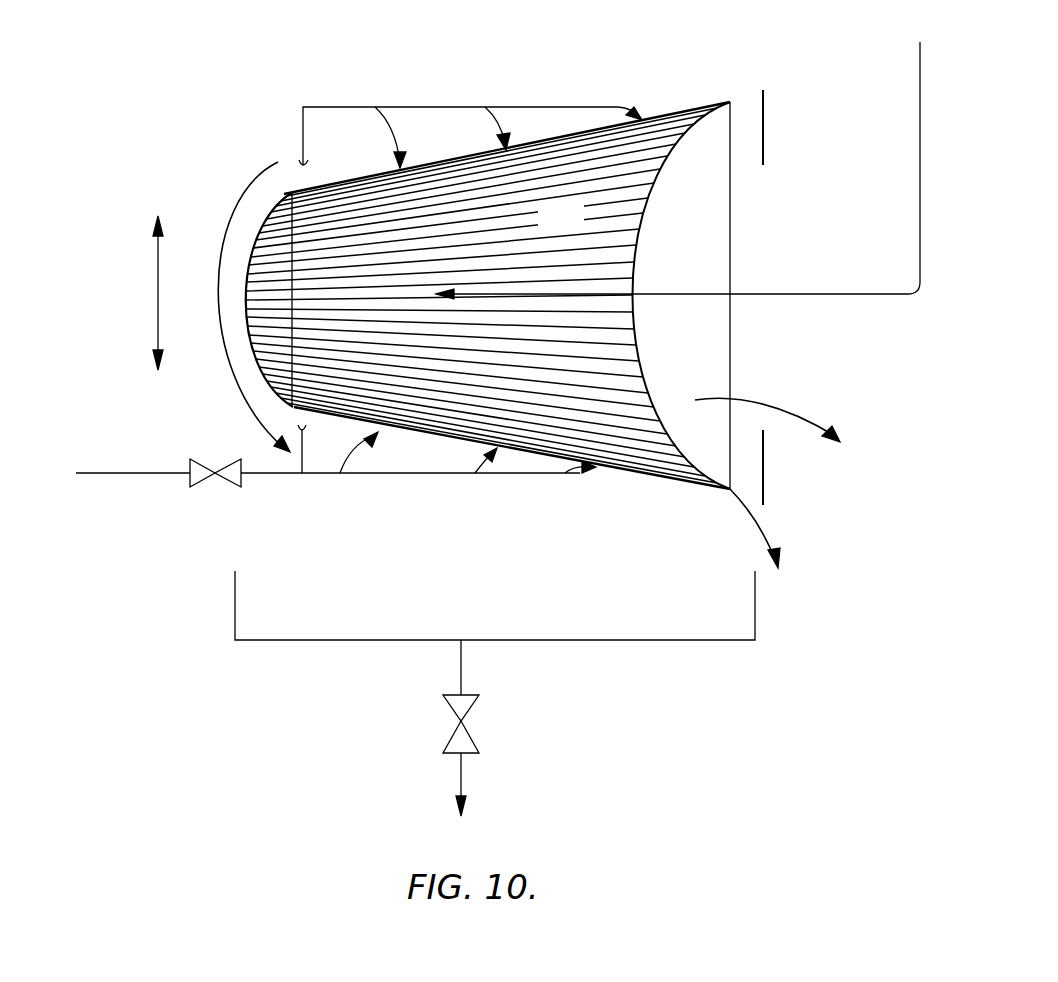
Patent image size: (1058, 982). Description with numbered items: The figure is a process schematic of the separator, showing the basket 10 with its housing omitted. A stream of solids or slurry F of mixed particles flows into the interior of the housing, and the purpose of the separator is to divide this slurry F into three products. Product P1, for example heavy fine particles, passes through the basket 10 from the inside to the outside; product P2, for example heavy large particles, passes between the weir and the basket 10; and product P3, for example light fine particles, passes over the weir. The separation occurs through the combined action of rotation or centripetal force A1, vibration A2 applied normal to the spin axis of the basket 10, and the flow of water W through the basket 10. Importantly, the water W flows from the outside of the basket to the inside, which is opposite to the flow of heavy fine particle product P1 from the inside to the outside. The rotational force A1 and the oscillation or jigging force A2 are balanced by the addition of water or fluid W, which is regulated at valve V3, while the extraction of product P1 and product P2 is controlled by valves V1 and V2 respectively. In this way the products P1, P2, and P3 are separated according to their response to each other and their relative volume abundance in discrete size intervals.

The basket 10 is at (572, 230).
The stream of solids F is at (680, 155).
The water W is at (552, 107).
The rotation or centripetal force A1 is at (252, 186).
The vibration A2 is at (158, 298).
The valve V1 is at (471, 724).
The valve V2 is at (766, 483).
The valve V3 is at (217, 479).
The product P1 is at (461, 816).
The product P2 is at (762, 533).
The product P3 is at (815, 412).